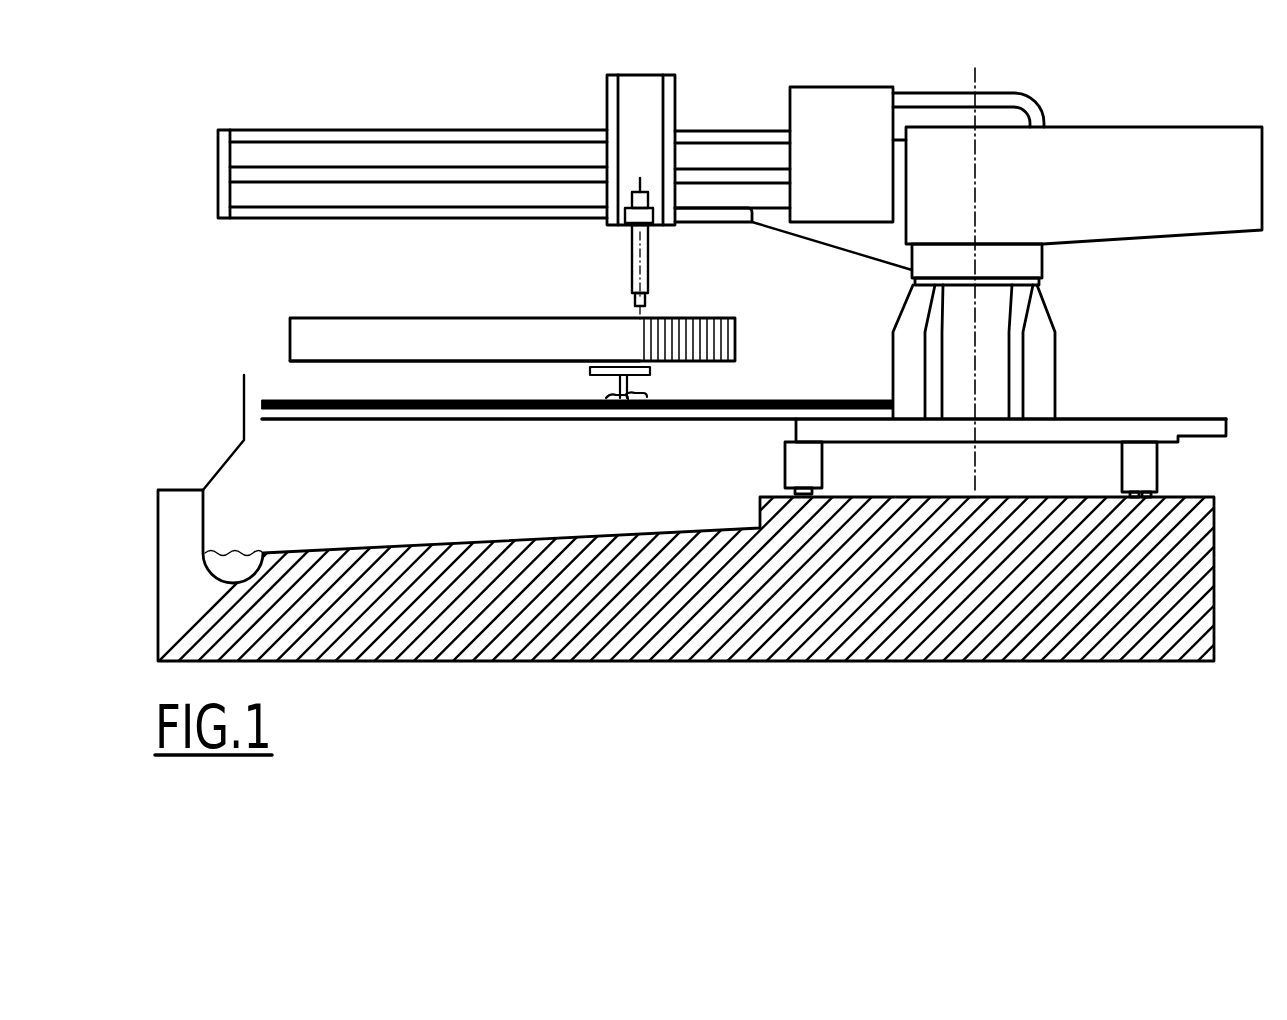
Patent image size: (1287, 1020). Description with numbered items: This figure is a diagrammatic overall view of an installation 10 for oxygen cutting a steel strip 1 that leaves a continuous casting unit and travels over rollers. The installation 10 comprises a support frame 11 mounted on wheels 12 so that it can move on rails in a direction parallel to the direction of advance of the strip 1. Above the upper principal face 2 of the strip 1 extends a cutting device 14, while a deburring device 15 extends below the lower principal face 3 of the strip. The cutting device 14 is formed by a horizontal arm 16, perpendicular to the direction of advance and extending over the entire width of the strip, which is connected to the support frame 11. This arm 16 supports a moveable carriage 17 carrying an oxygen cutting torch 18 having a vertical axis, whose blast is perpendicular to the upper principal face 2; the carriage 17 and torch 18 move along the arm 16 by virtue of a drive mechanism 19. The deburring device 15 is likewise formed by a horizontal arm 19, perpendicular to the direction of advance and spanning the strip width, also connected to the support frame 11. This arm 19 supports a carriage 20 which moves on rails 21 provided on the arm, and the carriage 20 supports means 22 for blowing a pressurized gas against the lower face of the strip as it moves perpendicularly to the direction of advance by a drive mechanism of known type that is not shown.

The steel strip 1 is at (268, 309).
The upper principal face 2 is at (343, 318).
The lower principal face 3 is at (340, 362).
The installation 10 is at (1094, 286).
The support frame 11 is at (912, 272).
The wheels 12 is at (826, 478).
The cutting device 14 is at (520, 119).
The deburring device 15 is at (568, 430).
The horizontal arm 16 is at (368, 135).
The moveable carriage 17 is at (640, 78).
The oxygen cutting torch 18 is at (632, 258).
The horizontal arm 19 is at (328, 175).
The carriage 20 is at (628, 410).
The rails 21 is at (351, 418).
The means for blowing a pressurized gas 22 is at (650, 372).